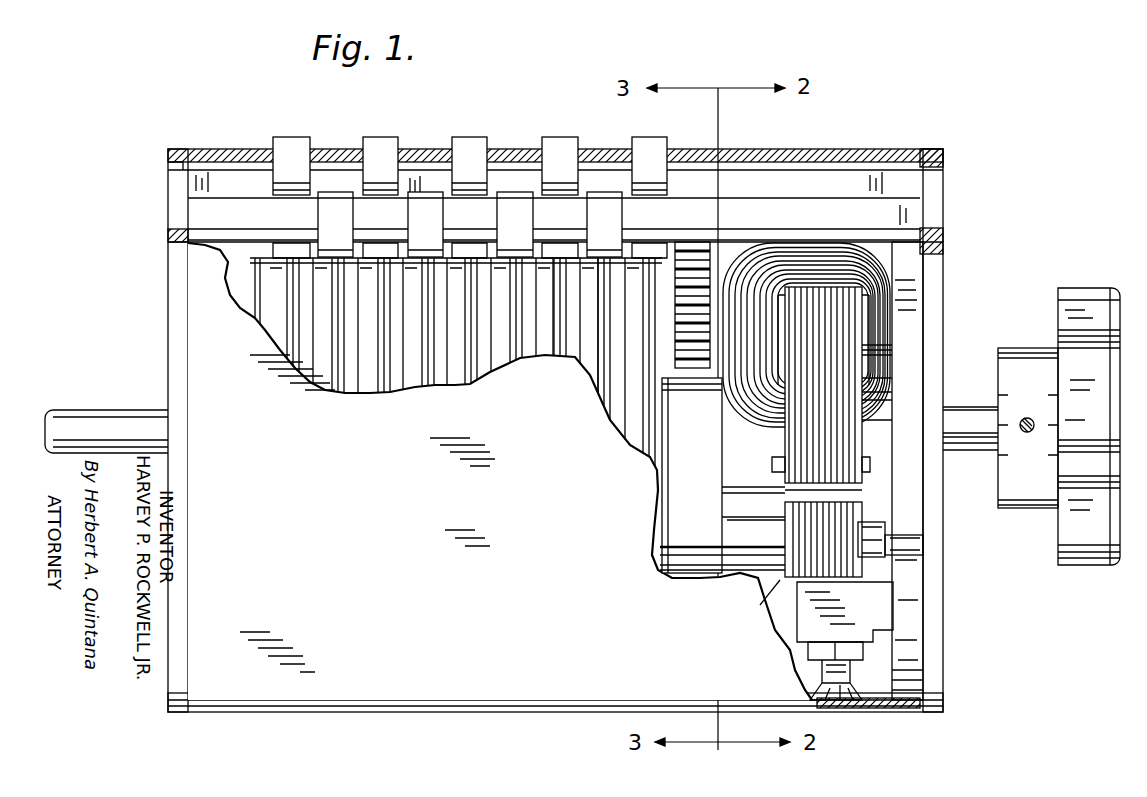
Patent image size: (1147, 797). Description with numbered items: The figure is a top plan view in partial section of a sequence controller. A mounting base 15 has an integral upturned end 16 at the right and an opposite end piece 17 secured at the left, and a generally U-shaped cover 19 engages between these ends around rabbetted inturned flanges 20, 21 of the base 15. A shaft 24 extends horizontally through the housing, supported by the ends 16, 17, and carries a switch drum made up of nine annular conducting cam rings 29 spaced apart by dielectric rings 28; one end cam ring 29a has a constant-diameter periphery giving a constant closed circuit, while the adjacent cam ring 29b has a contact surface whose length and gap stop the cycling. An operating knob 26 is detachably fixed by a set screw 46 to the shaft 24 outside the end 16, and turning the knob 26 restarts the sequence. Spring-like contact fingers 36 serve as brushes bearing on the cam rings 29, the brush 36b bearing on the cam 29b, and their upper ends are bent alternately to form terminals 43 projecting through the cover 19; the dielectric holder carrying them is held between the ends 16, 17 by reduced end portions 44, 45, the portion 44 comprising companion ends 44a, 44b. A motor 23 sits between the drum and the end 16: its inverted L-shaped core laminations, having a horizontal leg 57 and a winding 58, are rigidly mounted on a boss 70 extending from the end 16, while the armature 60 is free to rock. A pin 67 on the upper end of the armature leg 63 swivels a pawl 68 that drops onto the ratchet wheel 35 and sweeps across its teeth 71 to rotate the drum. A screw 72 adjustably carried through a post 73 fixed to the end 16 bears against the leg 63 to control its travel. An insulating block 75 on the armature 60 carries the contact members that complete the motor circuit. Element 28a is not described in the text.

The mounting base 15 is at (905, 698).
The upturned end 16 is at (945, 236).
The end piece 17 is at (168, 305).
The cover 19 is at (237, 150).
The inturned flange 20 is at (908, 332).
The inturned flange 21 is at (190, 168).
The motor 23 is at (892, 392).
The shaft 24 is at (95, 418).
The operating knob 26 is at (1095, 565).
The dielectric annular ring 28 is at (318, 378).
The plate edge 28a is at (276, 312).
The cam ring 29 is at (385, 382).
The end cam ring 29a is at (654, 440).
The cam ring 29b is at (600, 385).
The ratchet wheel 35 is at (688, 255).
The contact finger 36 is at (255, 262).
The brush 36b is at (600, 195).
The terminal 43 is at (428, 210).
The reduced end portion 44 is at (935, 196).
The companion end 44a is at (935, 213).
The companion end 44b is at (935, 175).
The reduced end portion 45 is at (170, 212).
The set screw 46 is at (1027, 418).
The horizontal leg 57 is at (840, 325).
The winding 58 is at (880, 268).
The armature 60 is at (830, 570).
The leg 63 is at (755, 606).
The pin 67 is at (660, 545).
The pawl 68 is at (680, 485).
The boss 70 is at (890, 343).
The teeth 71 is at (693, 378).
The screw 72 is at (840, 700).
The post 73 is at (805, 633).
The insulating block 75 is at (880, 528).